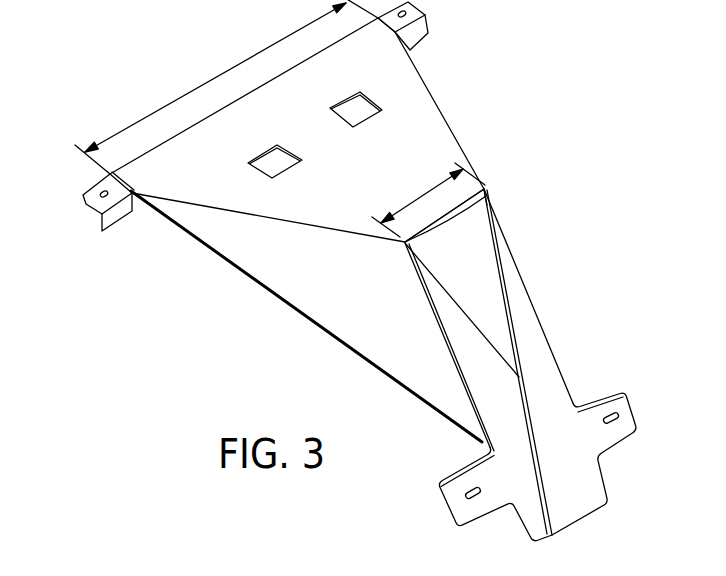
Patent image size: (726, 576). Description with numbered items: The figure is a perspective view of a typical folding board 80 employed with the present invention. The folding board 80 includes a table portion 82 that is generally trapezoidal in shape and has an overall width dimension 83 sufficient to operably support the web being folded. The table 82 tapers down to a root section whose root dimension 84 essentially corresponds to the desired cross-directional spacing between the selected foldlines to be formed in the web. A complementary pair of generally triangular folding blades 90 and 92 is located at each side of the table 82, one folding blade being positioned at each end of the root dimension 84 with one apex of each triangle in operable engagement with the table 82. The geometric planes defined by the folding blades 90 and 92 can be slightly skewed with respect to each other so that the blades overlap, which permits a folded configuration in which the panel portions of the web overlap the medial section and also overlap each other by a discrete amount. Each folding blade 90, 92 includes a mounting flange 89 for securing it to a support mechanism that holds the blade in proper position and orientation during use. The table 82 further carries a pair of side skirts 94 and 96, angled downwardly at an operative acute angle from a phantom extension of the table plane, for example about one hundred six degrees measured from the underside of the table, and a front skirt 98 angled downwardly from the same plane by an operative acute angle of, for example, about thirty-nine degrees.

The folding board 80 is at (112, 98).
The table portion 82 is at (432, 135).
The overall width dimension 83 is at (217, 72).
The root dimension 84 is at (422, 194).
The mounting flange 89 is at (622, 391).
The folding blade 90 is at (476, 393).
The folding blade 92 is at (543, 367).
The side skirt 94 is at (314, 293).
The side skirt 96 is at (481, 208).
The front skirt 98 is at (436, 230).